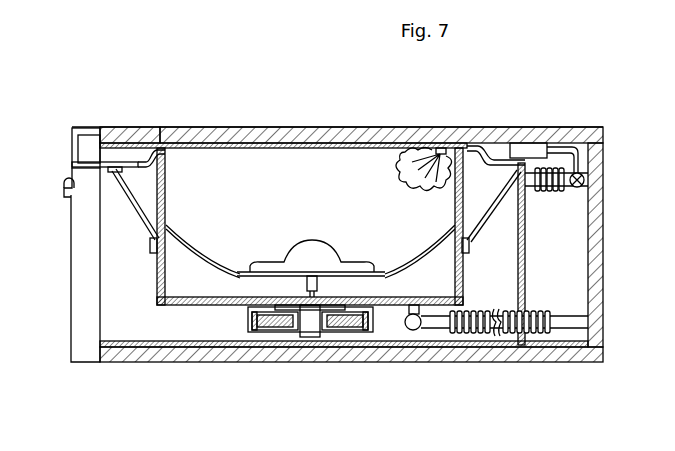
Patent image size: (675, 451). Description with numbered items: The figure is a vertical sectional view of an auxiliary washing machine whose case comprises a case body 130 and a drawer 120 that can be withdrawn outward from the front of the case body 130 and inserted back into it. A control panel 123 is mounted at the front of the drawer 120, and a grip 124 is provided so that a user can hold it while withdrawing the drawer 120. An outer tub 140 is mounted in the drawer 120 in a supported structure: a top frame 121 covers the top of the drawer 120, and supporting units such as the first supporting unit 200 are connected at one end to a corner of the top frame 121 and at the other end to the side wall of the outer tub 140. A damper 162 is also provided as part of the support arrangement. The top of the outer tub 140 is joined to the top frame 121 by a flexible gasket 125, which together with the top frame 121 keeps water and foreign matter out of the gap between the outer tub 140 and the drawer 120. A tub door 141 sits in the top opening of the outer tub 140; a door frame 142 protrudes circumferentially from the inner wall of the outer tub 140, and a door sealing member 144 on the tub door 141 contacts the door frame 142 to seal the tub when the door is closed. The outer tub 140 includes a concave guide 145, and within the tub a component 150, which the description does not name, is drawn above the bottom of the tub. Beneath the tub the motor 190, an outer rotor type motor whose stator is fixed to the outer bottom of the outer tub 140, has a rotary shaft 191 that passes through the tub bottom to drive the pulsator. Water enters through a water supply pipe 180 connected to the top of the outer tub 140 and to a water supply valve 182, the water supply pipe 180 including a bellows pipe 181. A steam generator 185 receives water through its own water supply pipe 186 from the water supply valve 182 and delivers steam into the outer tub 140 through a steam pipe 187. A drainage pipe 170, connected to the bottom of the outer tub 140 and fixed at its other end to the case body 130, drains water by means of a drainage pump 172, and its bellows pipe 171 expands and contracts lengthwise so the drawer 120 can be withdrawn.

The drawer 120 is at (86, 309).
The top frame 121 is at (115, 127).
The control panel 123 is at (72, 150).
The grip 124 is at (64, 192).
The gasket 125 is at (143, 141).
The case body 130 is at (164, 362).
The outer tub 140 is at (218, 306).
The tub door 141 is at (331, 135).
The door frame 142 is at (191, 141).
The door sealing member 144 is at (171, 141).
The concave guide 145 is at (383, 278).
The cover 150 is at (312, 239).
The damper 162 is at (483, 223).
The drainage pipe 170 is at (440, 335).
The bellows pipe 171 is at (494, 336).
The drainage pump 172 is at (411, 331).
The water supply pipe 180 is at (541, 143).
The bellows pipe 181 is at (609, 150).
The water supply valve 182 is at (575, 190).
The steam generator 185 is at (522, 148).
The water supply pipe of steam generator 186 is at (571, 141).
The steam pipe 187 is at (492, 148).
The motor 190 is at (268, 333).
The rotary shaft 191 is at (312, 337).
The first supporting unit 200 is at (142, 216).